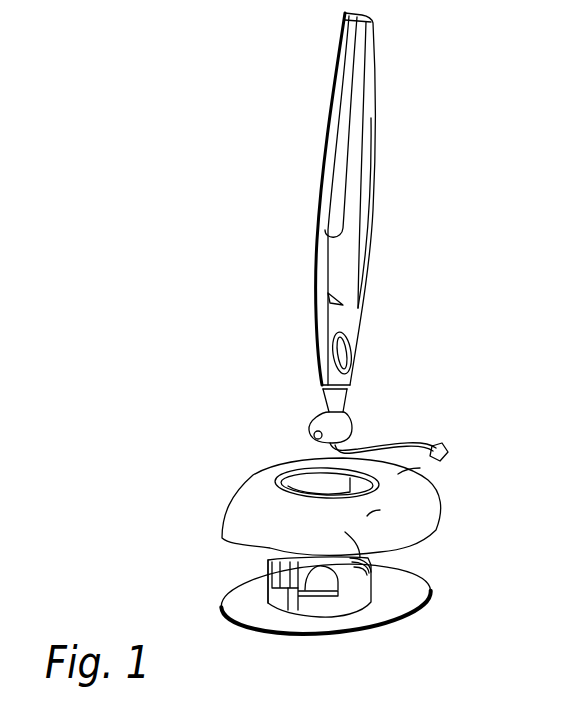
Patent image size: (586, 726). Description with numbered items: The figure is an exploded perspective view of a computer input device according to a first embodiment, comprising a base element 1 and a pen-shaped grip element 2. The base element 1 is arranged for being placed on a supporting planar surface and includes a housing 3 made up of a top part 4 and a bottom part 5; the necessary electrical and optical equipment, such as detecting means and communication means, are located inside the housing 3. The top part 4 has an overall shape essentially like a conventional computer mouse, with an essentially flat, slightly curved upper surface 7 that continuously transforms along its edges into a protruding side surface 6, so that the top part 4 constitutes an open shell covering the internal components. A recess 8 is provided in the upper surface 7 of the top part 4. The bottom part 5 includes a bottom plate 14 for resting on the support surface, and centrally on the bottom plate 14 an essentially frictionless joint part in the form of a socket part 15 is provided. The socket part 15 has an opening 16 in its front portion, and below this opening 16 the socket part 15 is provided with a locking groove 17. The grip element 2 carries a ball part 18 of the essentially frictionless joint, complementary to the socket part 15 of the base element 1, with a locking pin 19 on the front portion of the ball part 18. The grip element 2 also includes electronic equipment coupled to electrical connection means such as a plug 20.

The base element 1 is at (452, 490).
The grip element 2 is at (386, 211).
The housing 3 is at (190, 556).
The top part 4 is at (367, 516).
The bottom part 5 is at (413, 597).
The side surface 6 is at (370, 620).
The upper surface 7 is at (398, 474).
The recess 8 is at (317, 482).
The bottom plate 14 is at (254, 613).
The socket part 15 is at (358, 580).
The opening 16 is at (270, 572).
The locking groove 17 is at (290, 612).
The ball part 18 is at (352, 421).
The locking pin 19 is at (313, 437).
The plug 20 is at (420, 433).